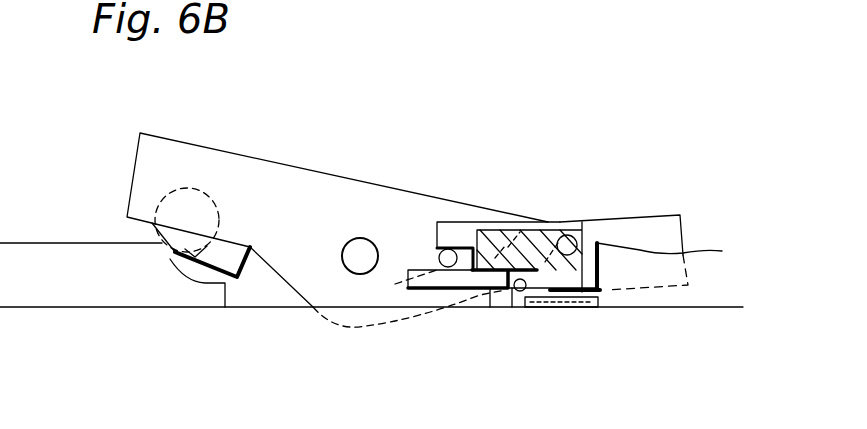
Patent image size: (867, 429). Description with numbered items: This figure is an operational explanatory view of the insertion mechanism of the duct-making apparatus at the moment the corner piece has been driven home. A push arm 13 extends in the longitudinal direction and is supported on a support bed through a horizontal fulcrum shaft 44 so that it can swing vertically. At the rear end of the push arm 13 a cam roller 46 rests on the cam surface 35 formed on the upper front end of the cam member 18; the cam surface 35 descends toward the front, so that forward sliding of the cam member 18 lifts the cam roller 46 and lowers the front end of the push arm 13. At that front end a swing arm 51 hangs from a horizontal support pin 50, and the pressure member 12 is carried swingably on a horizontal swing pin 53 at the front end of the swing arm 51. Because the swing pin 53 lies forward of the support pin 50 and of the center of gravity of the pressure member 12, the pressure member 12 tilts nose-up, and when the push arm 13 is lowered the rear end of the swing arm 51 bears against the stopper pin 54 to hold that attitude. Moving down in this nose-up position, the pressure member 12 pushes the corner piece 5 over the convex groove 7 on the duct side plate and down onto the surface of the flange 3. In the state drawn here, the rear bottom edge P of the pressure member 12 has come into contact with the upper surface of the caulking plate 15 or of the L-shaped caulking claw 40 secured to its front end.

The push arm 13 is at (297, 183).
The cam roller 46 is at (163, 200).
The fulcrum shaft 44 is at (368, 240).
The cam surface 35 is at (187, 280).
The cam member 18 is at (115, 288).
The caulking claw 40 is at (408, 268).
The caulking plate 15 is at (427, 292).
The stopper pin 54 is at (452, 290).
The swing arm 51 is at (492, 222).
The support pin 50 is at (530, 220).
The swing pin 53 is at (577, 240).
The pressure member 12 is at (608, 272).
The convex groove 7 is at (600, 293).
The corner piece 5 is at (574, 300).
The flange 3 is at (547, 305).
The rear bottom edge P is at (497, 292).